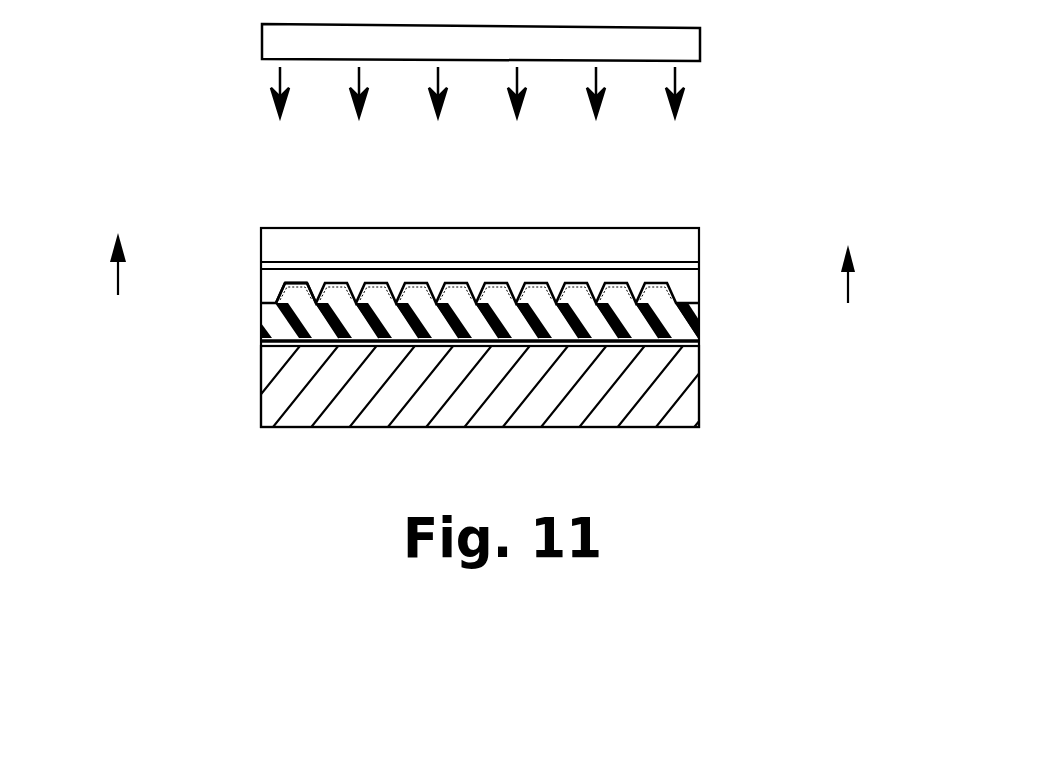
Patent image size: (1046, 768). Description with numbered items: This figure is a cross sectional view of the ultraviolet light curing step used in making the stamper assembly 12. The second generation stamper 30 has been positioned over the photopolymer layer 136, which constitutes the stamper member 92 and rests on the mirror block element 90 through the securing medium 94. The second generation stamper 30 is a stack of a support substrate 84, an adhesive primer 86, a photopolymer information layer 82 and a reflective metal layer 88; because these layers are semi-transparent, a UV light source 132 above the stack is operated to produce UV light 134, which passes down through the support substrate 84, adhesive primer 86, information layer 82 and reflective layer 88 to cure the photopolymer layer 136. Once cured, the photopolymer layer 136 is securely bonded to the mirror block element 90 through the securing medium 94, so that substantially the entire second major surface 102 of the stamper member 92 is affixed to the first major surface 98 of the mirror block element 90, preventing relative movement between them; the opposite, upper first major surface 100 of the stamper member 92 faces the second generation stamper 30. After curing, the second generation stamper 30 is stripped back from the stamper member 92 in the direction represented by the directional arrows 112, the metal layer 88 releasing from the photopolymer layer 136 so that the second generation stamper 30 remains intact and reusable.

The stamper assembly 12 is at (730, 203).
The second generation stamper 30 is at (660, 222).
The information layer 82 is at (471, 248).
The support substrate 84 is at (682, 243).
The adhesive primer 86 is at (688, 270).
The metal layer 88 is at (697, 308).
The mirror block element 90 is at (678, 405).
The stamper member 92 is at (262, 312).
The securing medium 94 is at (700, 345).
The first major surface 98 is at (262, 341).
The first major surface 100 is at (296, 283).
The second major surface 102 is at (636, 343).
The directional arrows 112 is at (118, 281).
The UV light source 132 is at (700, 43).
The UV light 134 is at (596, 78).
The photopolymer layer 136 is at (262, 312).